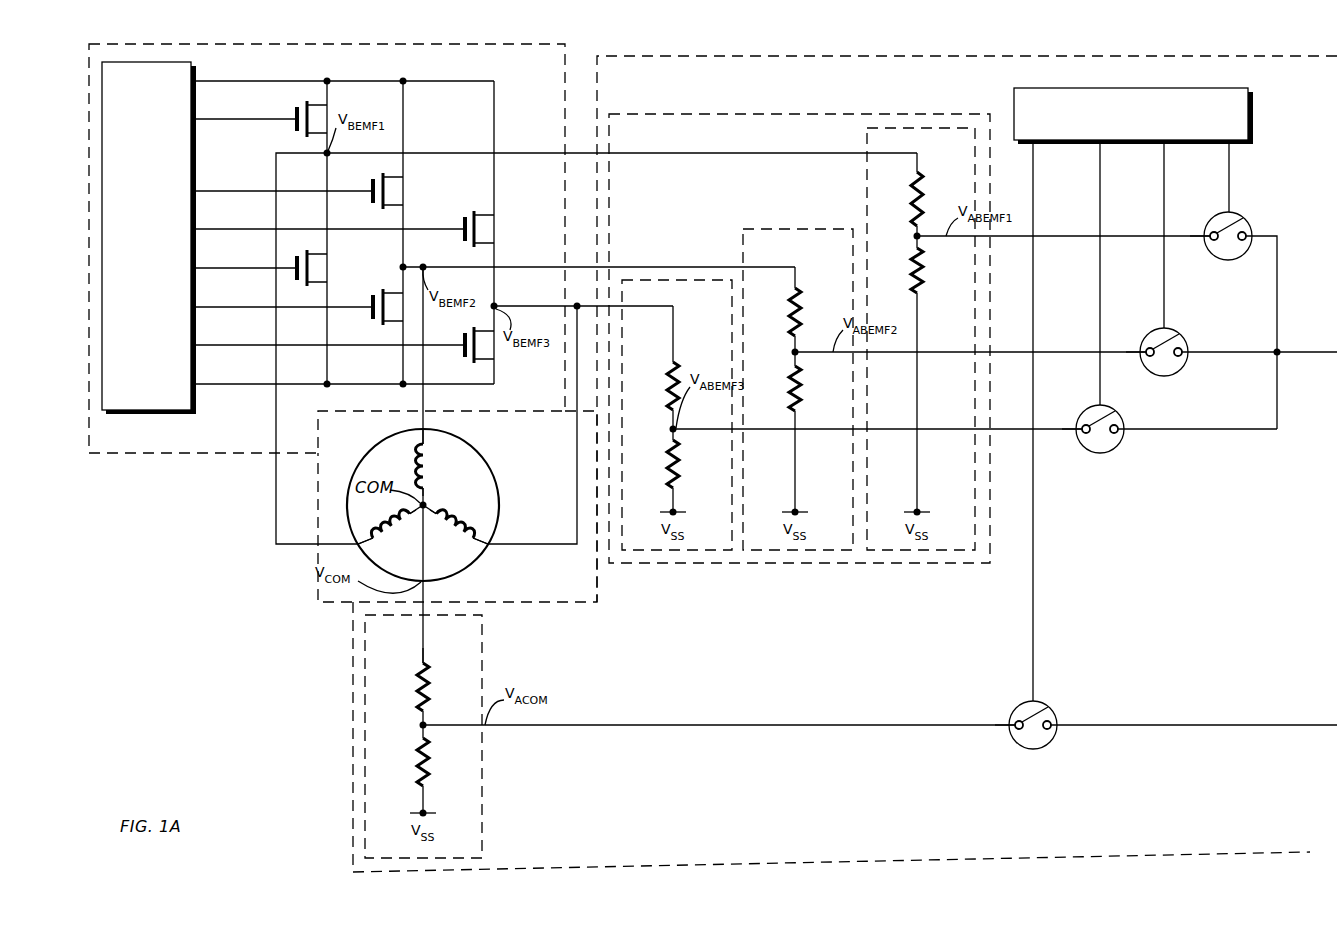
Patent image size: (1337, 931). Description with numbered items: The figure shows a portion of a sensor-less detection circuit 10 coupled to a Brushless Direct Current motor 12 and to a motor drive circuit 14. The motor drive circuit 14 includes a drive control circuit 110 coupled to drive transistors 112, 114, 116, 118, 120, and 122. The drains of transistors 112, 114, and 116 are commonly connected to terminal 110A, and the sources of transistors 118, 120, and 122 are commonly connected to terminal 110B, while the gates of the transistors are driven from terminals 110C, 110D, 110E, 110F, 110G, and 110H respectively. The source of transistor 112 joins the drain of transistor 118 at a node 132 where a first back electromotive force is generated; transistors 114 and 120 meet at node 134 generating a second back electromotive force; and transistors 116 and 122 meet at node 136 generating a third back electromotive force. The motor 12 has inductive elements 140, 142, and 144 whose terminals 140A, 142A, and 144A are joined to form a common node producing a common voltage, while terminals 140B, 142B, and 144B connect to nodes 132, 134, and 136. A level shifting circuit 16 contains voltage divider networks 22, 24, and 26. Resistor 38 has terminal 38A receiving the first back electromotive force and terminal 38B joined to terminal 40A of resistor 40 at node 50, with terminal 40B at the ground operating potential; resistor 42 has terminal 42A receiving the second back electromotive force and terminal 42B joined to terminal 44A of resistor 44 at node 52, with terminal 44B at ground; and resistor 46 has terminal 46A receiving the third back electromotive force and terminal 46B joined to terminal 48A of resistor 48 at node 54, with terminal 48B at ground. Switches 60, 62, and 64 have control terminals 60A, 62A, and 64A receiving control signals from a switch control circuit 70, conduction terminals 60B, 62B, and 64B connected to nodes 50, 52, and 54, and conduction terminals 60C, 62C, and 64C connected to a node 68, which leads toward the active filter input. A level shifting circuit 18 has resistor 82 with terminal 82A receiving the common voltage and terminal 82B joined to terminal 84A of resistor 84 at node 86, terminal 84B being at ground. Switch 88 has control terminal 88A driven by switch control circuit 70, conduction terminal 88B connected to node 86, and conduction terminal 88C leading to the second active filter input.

The sensor-less detection circuit 10 is at (868, 56).
The Brushless Direct Current (BLDC) motor 12 is at (376, 447).
The motor drive circuit 14 is at (192, 453).
The level shifting circuit 16 is at (818, 114).
The level shifting circuit 18 is at (483, 660).
The voltage divider network 22 is at (972, 480).
The voltage divider network 24 is at (842, 480).
The voltage divider network 26 is at (727, 499).
The resistor 38 is at (914, 183).
The terminal 38A is at (918, 168).
The terminal 38B is at (916, 220).
The resistor 40 is at (914, 262).
The terminal 40A is at (918, 260).
The terminal 40B is at (916, 313).
The resistor 42 is at (793, 298).
The terminal 42A is at (796, 276).
The terminal 42B is at (794, 337).
The resistor 44 is at (793, 372).
The terminal 44A is at (797, 366).
The terminal 44B is at (794, 414).
The resistor 46 is at (671, 376).
The terminal 46A is at (674, 352).
The terminal 46B is at (672, 413).
The resistor 48 is at (671, 458).
The terminal 48A is at (676, 447).
The terminal 48B is at (672, 498).
The node 50 is at (919, 234).
The node 52 is at (797, 350).
The node 54 is at (676, 428).
The switch 60 is at (1232, 262).
The control terminal 60A is at (1230, 200).
The conduction terminal 60B is at (1200, 236).
The conduction terminal 60C is at (1267, 236).
The switch 62 is at (1168, 376).
The control terminal 62A is at (1166, 318).
The conduction terminal 62B is at (1135, 352).
The conduction terminal 62C is at (1200, 352).
The switch 64 is at (1102, 453).
The control terminal 64A is at (1102, 386).
The conduction terminal 64B is at (1070, 429).
The conduction terminal 64C is at (1138, 429).
The node 68 is at (1279, 354).
The switch control circuit 70 is at (1254, 118).
The resistor 82 is at (415, 673).
The terminal 82A is at (423, 652).
The terminal 82B is at (422, 714).
The resistor 84 is at (416, 755).
The terminal 84A is at (425, 733).
The terminal 84B is at (420, 790).
The node 86 is at (424, 724).
The switch 88 is at (1034, 750).
The control terminal 88A is at (1035, 690).
The conduction terminal 88B is at (1003, 725).
The conduction terminal 88C is at (1068, 725).
The drive control circuit 110 is at (146, 414).
The terminal 110A is at (200, 81).
The terminal 110B is at (200, 384).
The terminal 110C is at (200, 119).
The terminal 110D is at (200, 191).
The terminal 110E is at (200, 229).
The terminal 110F is at (200, 268).
The terminal 110G is at (200, 307).
The terminal 110H is at (200, 345).
The drive transistor 112 is at (326, 112).
The drive transistor 114 is at (390, 192).
The drive transistor 116 is at (490, 230).
The drive transistor 118 is at (316, 273).
The drive transistor 120 is at (382, 292).
The drive transistor 122 is at (490, 350).
The node 132 is at (325, 155).
The node 134 is at (422, 266).
The node 136 is at (496, 305).
The inductive element 140 is at (390, 538).
The terminal 140A is at (414, 512).
The terminal 140B is at (356, 540).
The inductive element 142 is at (412, 470).
The terminal 142A is at (428, 492).
The terminal 142B is at (430, 436).
The inductive element 144 is at (452, 512).
The terminal 144A is at (434, 518).
The terminal 144B is at (490, 540).